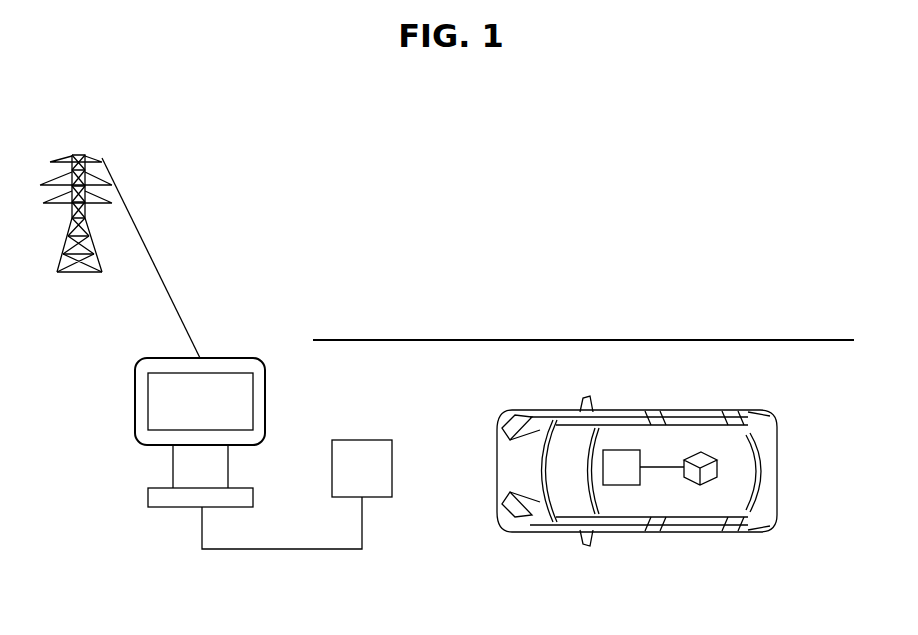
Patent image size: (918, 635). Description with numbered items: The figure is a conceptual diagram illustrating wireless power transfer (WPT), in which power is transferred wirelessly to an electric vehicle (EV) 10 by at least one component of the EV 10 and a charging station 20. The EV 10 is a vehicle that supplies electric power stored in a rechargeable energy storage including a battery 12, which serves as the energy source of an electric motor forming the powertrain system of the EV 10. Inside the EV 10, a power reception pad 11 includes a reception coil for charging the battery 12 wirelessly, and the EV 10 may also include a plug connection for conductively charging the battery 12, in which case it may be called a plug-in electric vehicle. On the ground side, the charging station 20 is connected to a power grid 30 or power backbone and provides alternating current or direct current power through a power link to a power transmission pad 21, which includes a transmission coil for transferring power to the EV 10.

The electric vehicle 10 is at (653, 412).
The power reception pad 11 is at (618, 449).
The battery 12 is at (700, 452).
The charging station 20 is at (228, 358).
The power transmission pad 21 is at (362, 440).
The power grid 30 is at (79, 155).